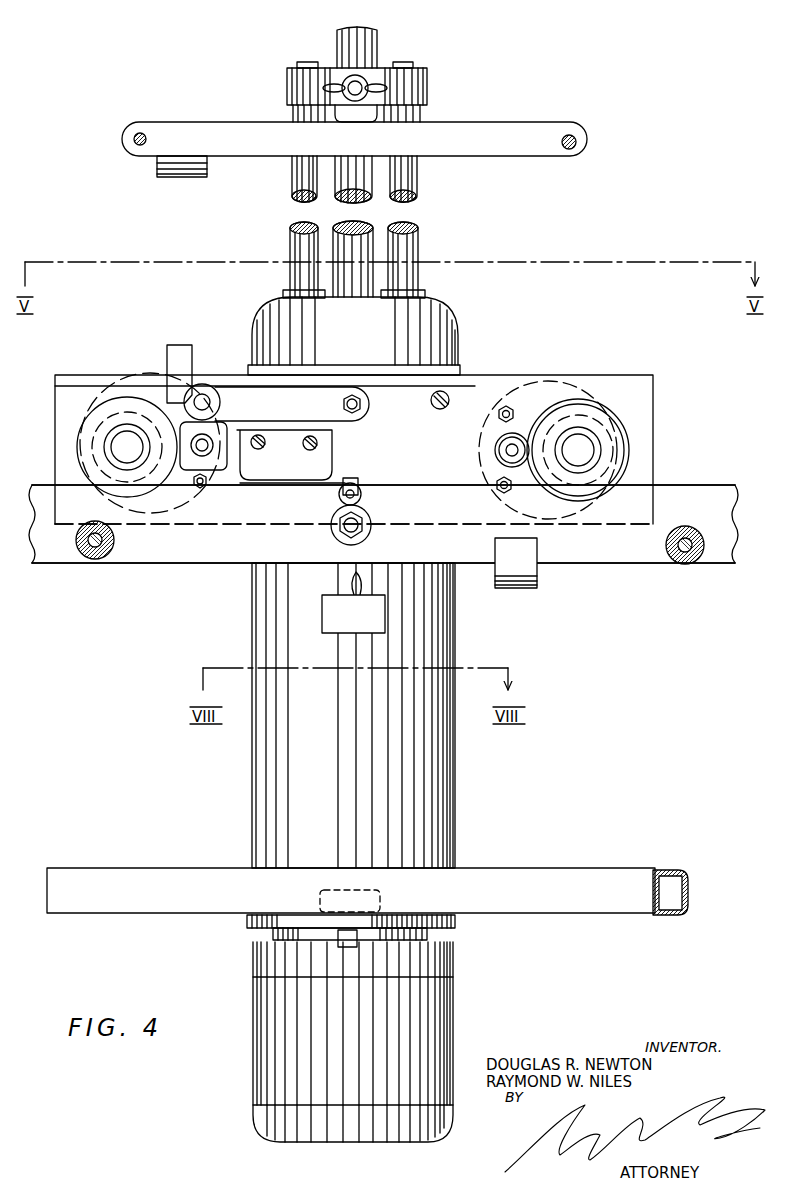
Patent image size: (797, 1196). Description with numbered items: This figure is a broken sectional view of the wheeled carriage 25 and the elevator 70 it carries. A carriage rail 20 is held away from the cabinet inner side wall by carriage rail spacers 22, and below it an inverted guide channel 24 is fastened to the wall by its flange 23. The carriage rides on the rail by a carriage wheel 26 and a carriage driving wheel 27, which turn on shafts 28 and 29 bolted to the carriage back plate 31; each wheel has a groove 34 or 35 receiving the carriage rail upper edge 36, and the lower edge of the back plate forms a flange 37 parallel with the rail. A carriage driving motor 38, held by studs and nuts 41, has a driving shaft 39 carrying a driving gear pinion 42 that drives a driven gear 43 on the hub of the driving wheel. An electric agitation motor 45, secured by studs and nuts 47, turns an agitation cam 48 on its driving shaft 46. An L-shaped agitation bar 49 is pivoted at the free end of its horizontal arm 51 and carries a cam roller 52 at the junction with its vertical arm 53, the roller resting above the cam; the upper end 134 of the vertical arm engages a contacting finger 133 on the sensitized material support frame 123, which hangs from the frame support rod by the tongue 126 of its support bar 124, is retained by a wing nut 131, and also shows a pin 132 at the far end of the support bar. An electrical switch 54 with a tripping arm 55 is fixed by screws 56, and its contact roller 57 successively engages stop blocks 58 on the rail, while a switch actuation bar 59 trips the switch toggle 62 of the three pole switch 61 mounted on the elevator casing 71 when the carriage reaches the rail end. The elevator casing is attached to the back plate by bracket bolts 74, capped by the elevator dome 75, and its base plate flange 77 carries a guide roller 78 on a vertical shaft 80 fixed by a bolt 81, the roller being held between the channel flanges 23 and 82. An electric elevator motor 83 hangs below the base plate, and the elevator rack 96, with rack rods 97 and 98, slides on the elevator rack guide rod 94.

The carriage rail 20 is at (168, 551).
The carriage rail spacers 22 is at (100, 559).
The flange 23 is at (608, 895).
The inverted guide channel 24 is at (548, 869).
The wheeled carriage 25 is at (577, 376).
The carriage wheel 26 is at (104, 403).
The carriage driving wheel 27 is at (624, 451).
The shaft 28 is at (117, 445).
The shaft 29 is at (582, 446).
The carriage back plate 31 is at (506, 386).
The groove 34 is at (93, 431).
The groove 35 is at (612, 467).
The carriage rail upper edge 36 is at (722, 484).
The flange 37 is at (601, 531).
The carriage driving motor 38 is at (492, 466).
The driving shaft 39 is at (506, 450).
The studs and nuts 41 is at (498, 413).
The driving gear pinion 42 is at (517, 438).
The driven gear 43 is at (626, 441).
The electric agitation motor 45 is at (147, 410).
The driving shaft 46 is at (206, 449).
The studs and nuts 47 is at (203, 488).
The agitation cam 48 is at (218, 437).
The agitation bar 49 is at (231, 374).
The horizontal arm 51 is at (284, 400).
The cam roller 52 is at (202, 396).
The vertical arm 53 is at (177, 358).
The electrical switch 54 is at (308, 471).
The tripping arm 55 is at (340, 478).
The screws 56 is at (309, 449).
The contact roller 57 is at (366, 494).
The stop blocks 58 is at (372, 531).
The switch actuation bar 59 is at (535, 589).
The double throw, three pole switch 61 is at (345, 621).
The switch toggle 62 is at (352, 580).
The elevator 70 is at (243, 738).
The elevator casing 71 is at (437, 786).
The bracket bolts 74 is at (447, 394).
The elevator dome 75 is at (446, 320).
The flange 77 is at (338, 930).
The guide roller 78 is at (330, 890).
The vertical shaft 80 is at (368, 918).
The bolt 81 is at (348, 942).
The flange 82 is at (688, 895).
The electric elevator motor 83 is at (440, 1023).
The elevator rack guide rod 94 is at (372, 250).
The elevator rack 96 is at (432, 80).
The rack rod 97 is at (406, 176).
The rack rod 98 is at (304, 172).
The sensitized material support frame 123 is at (498, 122).
The support bar 124 is at (545, 134).
The tongue 126 is at (355, 105).
The wing nut 131 is at (371, 87).
The pin 132 is at (578, 143).
The contacting finger 133 is at (183, 166).
The upper end 134 is at (183, 346).